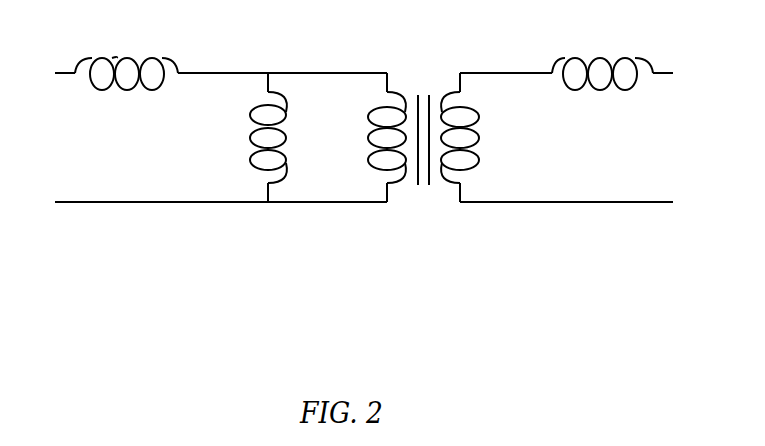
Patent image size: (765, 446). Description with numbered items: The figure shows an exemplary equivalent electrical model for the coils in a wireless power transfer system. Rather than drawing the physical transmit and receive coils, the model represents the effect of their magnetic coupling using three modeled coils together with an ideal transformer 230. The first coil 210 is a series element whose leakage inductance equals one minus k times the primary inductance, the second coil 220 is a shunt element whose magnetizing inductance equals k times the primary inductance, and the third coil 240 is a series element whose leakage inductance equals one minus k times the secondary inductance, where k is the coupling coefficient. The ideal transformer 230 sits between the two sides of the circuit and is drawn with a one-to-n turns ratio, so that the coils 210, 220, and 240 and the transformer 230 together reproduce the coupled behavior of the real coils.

The coil 210 is at (85, 83).
The coil 220 is at (252, 192).
The ideal transformer 230 is at (428, 250).
The coil 240 is at (603, 120).